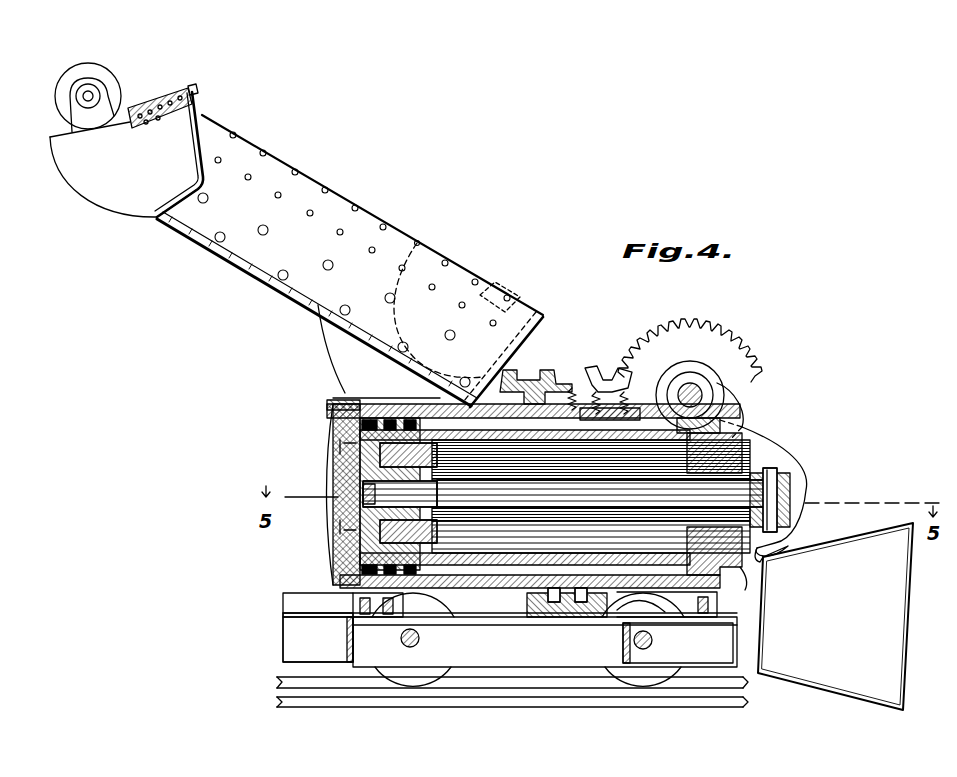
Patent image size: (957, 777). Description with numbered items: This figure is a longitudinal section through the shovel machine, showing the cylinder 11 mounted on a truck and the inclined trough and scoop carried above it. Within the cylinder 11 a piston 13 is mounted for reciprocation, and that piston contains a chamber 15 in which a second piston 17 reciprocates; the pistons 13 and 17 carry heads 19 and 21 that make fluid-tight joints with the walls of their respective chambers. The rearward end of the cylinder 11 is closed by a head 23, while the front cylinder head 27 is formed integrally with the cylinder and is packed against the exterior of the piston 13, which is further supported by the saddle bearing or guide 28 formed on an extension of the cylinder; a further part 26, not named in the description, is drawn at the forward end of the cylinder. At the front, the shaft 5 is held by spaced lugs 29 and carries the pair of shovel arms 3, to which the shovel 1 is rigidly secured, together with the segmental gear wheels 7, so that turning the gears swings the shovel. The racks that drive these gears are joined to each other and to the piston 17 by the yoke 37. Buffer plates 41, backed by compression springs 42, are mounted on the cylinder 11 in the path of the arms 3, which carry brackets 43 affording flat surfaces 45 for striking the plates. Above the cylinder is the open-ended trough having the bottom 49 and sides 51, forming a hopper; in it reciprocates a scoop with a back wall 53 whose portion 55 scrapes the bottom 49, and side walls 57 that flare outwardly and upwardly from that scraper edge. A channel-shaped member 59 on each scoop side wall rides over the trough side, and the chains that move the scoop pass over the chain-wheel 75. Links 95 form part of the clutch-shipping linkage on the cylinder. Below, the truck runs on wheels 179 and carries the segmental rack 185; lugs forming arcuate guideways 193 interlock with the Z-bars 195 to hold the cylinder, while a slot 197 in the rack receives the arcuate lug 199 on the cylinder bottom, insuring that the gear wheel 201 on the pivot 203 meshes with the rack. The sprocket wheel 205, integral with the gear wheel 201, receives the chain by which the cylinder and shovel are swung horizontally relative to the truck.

The shovel 1 is at (908, 592).
The shovel arms 3 is at (792, 448).
The shaft 5 is at (695, 385).
The segmental gear wheels 7 is at (725, 342).
The cylinder 11 is at (387, 416).
The piston 13 is at (505, 560).
The chamber 15 is at (525, 497).
The piston 17 is at (515, 490).
The head 19 is at (335, 428).
The head 21 is at (440, 528).
The head 23 is at (338, 448).
The bearing block 26 is at (740, 466).
The front cylinder head 27 is at (628, 568).
The saddle bearing or guide 28 is at (742, 568).
The spaced lugs 29 is at (728, 410).
The yoke 37 is at (793, 500).
The buffer plates 41 is at (600, 368).
The compression springs 42 is at (572, 386).
The brackets 43 is at (752, 452).
The flat surfaces 45 is at (745, 432).
The bottom 49 is at (268, 278).
The sides 51 is at (340, 208).
The back wall 53 is at (196, 136).
The portion 55 is at (190, 198).
The side walls 57 is at (92, 193).
The channel-shaped member 59 is at (142, 104).
The chain-wheel 75 is at (88, 66).
The links 95 is at (520, 382).
The wheels 179 is at (414, 675).
The segmental rack 185 is at (588, 628).
The arcuate guideways 193 is at (382, 616).
The Z-bars 195 is at (420, 601).
The slot 197 is at (598, 618).
The arcuate lug 199 is at (618, 604).
The gear wheel 201 is at (532, 620).
The pivot 203 is at (546, 620).
The sprocket wheel 205 is at (520, 600).